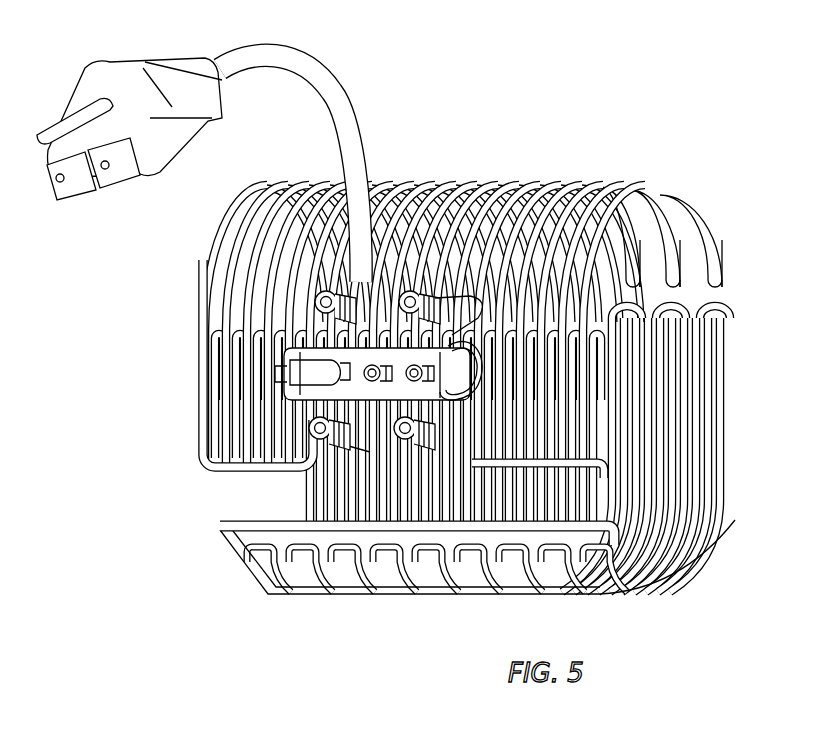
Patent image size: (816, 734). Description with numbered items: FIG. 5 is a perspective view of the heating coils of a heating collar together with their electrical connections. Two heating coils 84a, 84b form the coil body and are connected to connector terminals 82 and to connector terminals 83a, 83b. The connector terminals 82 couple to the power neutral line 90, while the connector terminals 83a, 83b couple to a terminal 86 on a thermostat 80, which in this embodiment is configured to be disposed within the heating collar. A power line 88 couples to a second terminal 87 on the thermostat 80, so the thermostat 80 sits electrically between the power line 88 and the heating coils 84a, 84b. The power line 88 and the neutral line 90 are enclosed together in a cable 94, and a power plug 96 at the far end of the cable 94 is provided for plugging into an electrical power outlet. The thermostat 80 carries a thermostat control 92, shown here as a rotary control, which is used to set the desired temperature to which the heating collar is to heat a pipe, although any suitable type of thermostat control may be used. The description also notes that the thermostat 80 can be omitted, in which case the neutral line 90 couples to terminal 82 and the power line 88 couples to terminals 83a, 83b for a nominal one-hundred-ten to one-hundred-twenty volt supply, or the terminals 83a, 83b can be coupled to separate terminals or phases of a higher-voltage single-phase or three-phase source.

The thermostat 80 is at (313, 408).
The connector terminal 82 is at (320, 302).
The connector terminal 83a is at (430, 298).
The connector terminal 83b is at (455, 405).
The heating coil 84a is at (697, 212).
The heating coil 84b is at (705, 560).
The terminal 86 is at (458, 432).
The terminal 87 is at (347, 455).
The power line 88 is at (370, 373).
The power neutral line 90 is at (455, 350).
The thermostat control 92 is at (300, 372).
The cable 94 is at (336, 88).
The power plug 96 is at (97, 70).